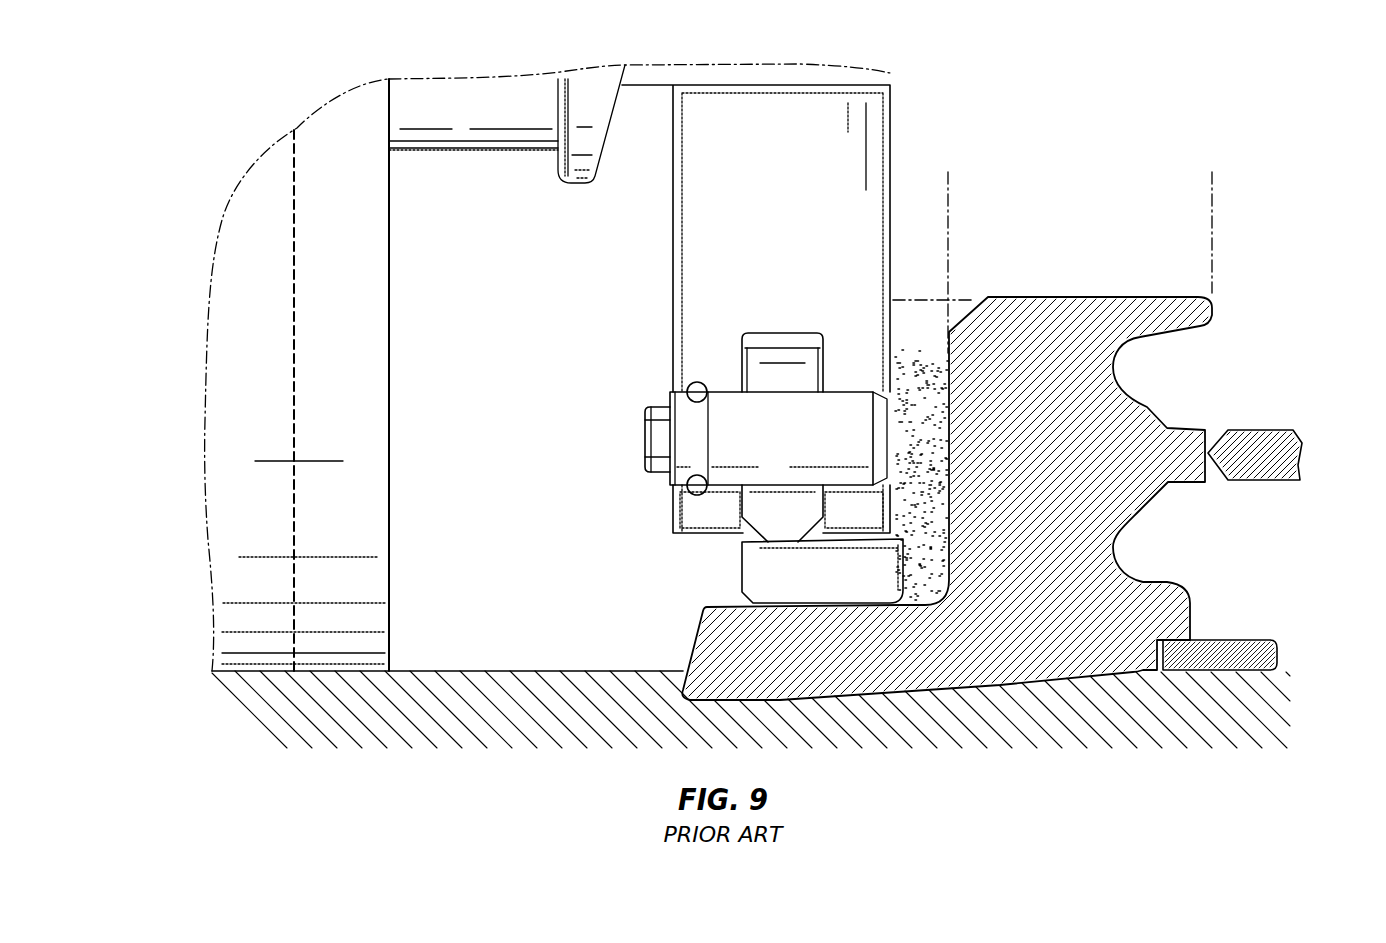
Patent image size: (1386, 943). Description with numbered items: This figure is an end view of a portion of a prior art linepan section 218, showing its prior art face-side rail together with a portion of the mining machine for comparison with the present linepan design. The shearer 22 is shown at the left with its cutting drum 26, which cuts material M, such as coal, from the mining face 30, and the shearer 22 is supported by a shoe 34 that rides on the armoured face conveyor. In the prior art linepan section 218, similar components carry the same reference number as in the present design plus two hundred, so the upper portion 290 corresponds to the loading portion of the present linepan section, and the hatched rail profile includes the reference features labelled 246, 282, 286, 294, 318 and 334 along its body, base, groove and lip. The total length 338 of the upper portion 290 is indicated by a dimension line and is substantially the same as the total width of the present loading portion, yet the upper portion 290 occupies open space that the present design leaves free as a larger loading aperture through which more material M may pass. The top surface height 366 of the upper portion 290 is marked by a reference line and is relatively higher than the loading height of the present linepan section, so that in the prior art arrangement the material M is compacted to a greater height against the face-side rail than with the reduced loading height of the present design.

The shearer 22 is at (768, 157).
The cutting drum 26 is at (458, 116).
The mining face 30 is at (259, 354).
The shoe 34 is at (817, 587).
The material M is at (910, 444).
The prior art linepan section 218 is at (1270, 340).
The hub flange 246 is at (1023, 492).
The base portion 282 is at (690, 642).
The groove 286 is at (1063, 540).
The upper portion 290 is at (1051, 288).
The corner 294 is at (773, 600).
The lip 318 is at (1130, 296).
The edge 334 is at (963, 287).
The total length 338 is at (955, 188).
The top surface height 366 is at (919, 292).